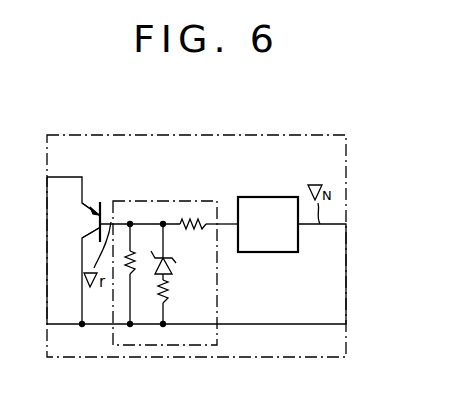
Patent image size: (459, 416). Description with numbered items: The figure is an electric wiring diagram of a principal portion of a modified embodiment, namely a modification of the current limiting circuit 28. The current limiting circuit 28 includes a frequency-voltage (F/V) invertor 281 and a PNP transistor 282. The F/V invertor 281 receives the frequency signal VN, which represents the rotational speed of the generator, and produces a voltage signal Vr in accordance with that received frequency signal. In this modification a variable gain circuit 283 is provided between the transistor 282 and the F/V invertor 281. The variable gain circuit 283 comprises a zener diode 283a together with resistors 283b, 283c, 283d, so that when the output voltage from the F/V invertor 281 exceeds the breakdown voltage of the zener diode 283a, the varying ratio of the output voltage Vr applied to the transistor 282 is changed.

The current limiting circuit 28 is at (347, 162).
The frequency-voltage (F/V) invertor 281 is at (253, 197).
The PNP transistor 282 is at (97, 212).
The variable gain circuit 283 is at (145, 202).
The zener diode 283a is at (176, 263).
The resistor 283b is at (171, 294).
The resistor 283c is at (128, 277).
The resistor 283d is at (188, 230).